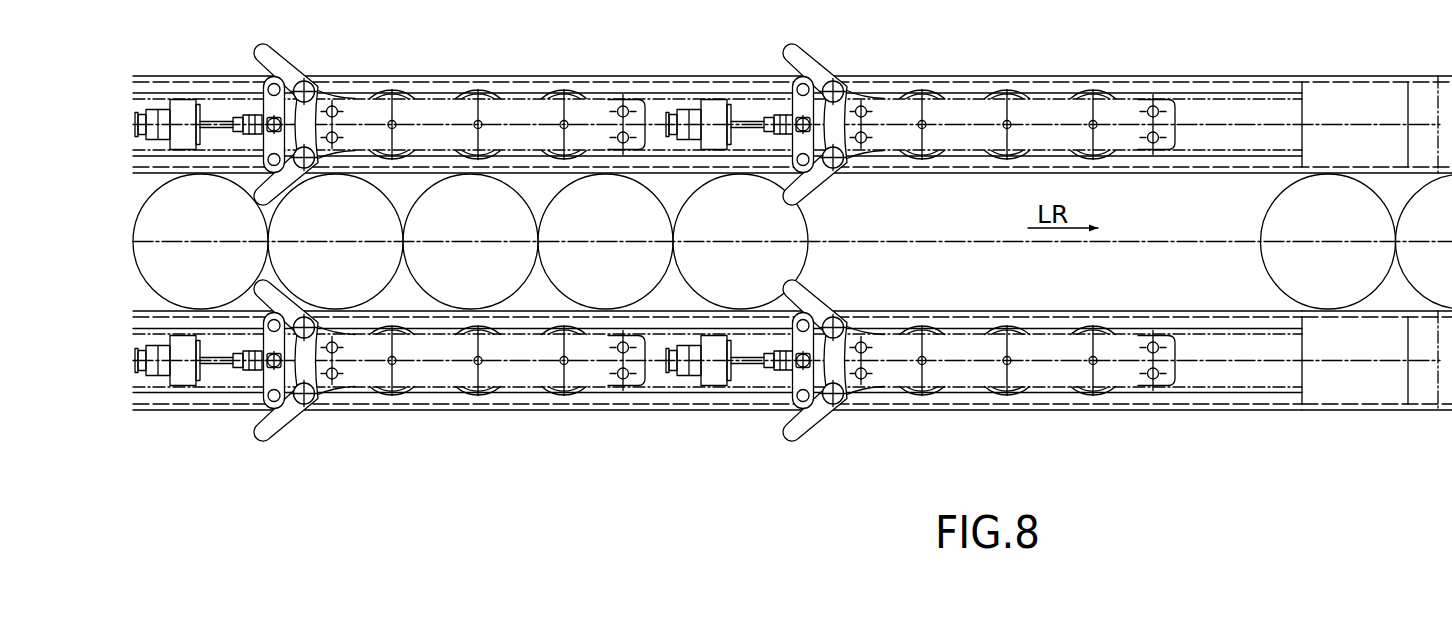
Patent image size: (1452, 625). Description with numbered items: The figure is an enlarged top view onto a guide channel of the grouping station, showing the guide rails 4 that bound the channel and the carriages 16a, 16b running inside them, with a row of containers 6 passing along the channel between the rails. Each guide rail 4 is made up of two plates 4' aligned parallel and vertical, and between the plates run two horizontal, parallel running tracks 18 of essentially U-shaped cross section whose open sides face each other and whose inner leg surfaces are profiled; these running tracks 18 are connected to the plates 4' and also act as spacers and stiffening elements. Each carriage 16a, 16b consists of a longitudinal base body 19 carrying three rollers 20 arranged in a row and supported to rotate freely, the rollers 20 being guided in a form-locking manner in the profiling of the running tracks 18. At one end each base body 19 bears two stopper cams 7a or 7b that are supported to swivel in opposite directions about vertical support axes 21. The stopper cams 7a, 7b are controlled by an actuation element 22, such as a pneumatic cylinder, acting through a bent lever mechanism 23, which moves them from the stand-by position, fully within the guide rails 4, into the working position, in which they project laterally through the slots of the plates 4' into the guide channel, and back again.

The guide rail 4 is at (717, 330).
The plate 4' is at (1377, 360).
The containers 6 is at (638, 210).
The stopper cam 7a is at (277, 186).
The stopper cam 7b is at (812, 295).
The carriage 16a is at (446, 94).
The carriage 16b is at (957, 158).
The running track 18 is at (1185, 394).
The longitudinal base body 19 is at (437, 372).
The roller 20 is at (547, 391).
The vertical support axis 21 is at (838, 316).
The actuation element 22 is at (747, 361).
The bent lever mechanism 23 is at (790, 385).